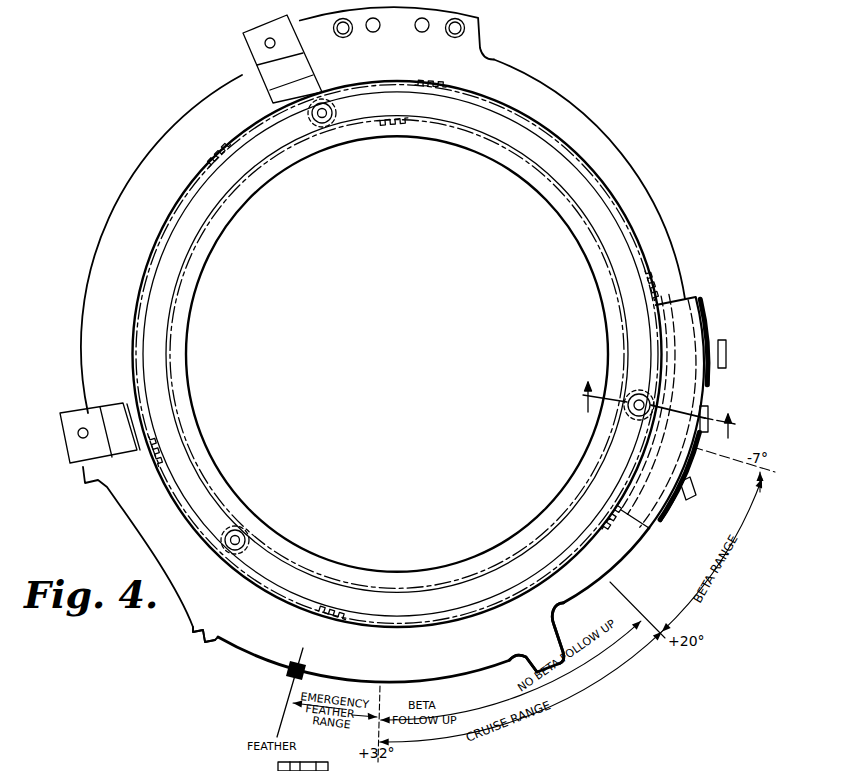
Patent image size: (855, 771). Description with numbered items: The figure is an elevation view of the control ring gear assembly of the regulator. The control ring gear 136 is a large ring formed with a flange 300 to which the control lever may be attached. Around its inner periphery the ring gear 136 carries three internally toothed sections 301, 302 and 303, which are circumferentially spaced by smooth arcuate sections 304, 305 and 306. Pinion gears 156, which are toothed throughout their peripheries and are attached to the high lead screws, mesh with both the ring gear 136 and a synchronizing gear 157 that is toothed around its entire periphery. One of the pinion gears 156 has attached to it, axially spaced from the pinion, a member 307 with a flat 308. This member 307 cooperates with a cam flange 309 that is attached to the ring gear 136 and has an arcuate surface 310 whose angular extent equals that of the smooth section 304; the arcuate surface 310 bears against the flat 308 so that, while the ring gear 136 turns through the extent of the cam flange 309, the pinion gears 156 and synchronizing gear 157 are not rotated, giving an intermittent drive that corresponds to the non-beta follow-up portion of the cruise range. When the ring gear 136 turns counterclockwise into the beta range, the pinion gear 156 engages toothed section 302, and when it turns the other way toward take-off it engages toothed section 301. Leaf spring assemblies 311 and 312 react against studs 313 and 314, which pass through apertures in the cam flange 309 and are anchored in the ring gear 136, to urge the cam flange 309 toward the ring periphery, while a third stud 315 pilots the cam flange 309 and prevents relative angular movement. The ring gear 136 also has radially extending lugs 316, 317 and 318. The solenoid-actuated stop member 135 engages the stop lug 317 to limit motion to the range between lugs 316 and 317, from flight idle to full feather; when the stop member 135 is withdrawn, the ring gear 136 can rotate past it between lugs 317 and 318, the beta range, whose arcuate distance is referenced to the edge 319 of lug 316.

The flange 300 is at (478, 48).
The control ring gear 136 is at (584, 113).
The pinion gears 156 is at (625, 412).
The smooth arcuate section 306 is at (262, 120).
The internally toothed section 301 is at (660, 282).
The leaf spring assembly 312 is at (707, 322).
The smooth arcuate section 304 is at (660, 342).
The member 307 is at (643, 387).
The stud 314 is at (715, 352).
The flat 308 is at (662, 397).
The third stud 315 is at (730, 411).
The arcuate surface 310 is at (633, 468).
The synchronizing gear 157 is at (562, 515).
The stud 313 is at (694, 482).
The leaf spring assembly 311 is at (675, 505).
The cam flange 309 is at (643, 507).
The internally toothed section 302 is at (613, 560).
The radially extending lug 316 is at (553, 642).
The edge 319 is at (512, 662).
The internally toothed section 303 is at (157, 447).
The radially extending lug 318 is at (83, 465).
The smooth arcuate section 305 is at (273, 587).
The stop lug 317 is at (204, 641).
The stop member 135 is at (289, 670).